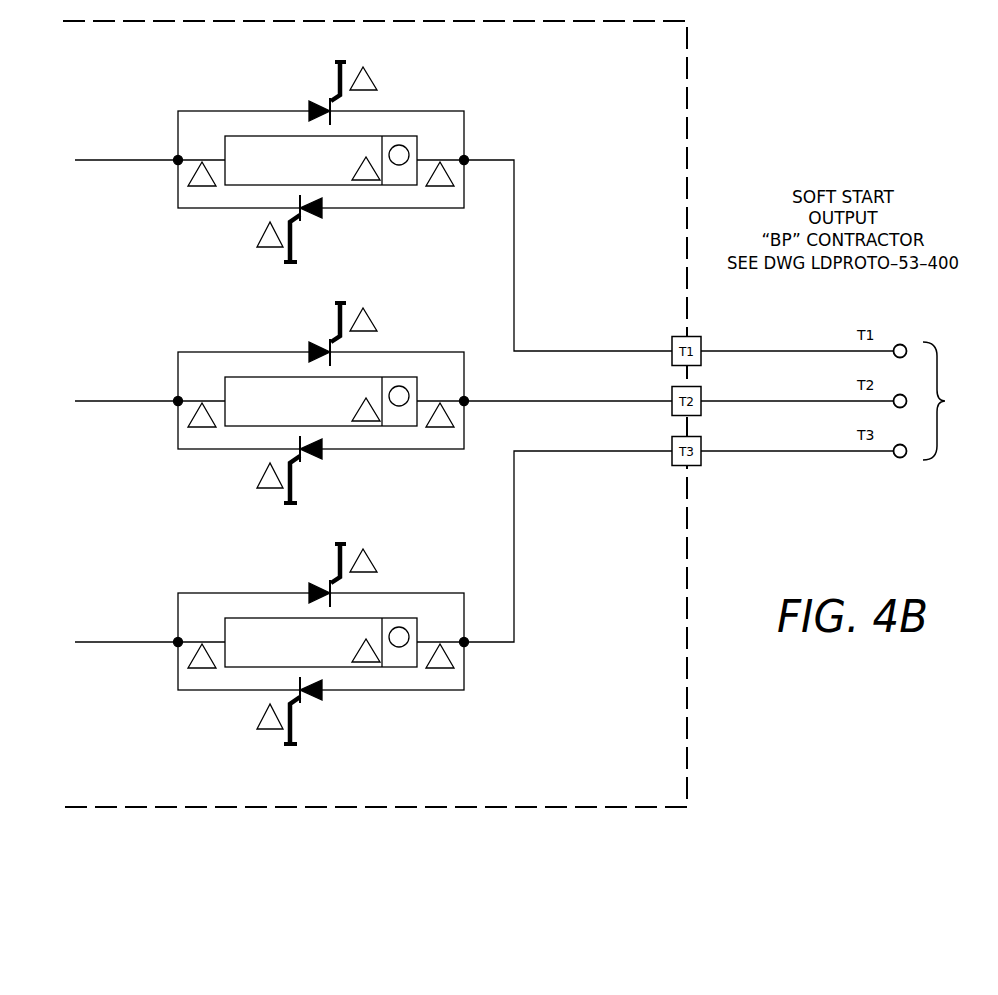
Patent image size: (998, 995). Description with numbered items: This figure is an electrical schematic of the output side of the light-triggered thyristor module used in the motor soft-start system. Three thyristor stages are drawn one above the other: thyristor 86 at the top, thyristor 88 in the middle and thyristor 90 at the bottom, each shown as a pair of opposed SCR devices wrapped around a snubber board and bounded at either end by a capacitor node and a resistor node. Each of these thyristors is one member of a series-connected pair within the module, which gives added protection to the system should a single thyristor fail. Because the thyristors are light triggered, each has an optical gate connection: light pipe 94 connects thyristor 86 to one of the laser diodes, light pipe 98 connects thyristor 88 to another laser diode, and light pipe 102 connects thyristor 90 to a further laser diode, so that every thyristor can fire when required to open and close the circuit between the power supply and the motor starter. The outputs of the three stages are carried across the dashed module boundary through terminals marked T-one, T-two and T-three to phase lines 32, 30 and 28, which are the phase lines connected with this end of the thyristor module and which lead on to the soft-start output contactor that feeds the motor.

The thyristor 86 is at (423, 203).
The thyristor 88 is at (423, 444).
The thyristor 90 is at (440, 685).
The light pipe 94 is at (343, 63).
The light pipe 98 is at (343, 304).
The light pipe 102 is at (343, 545).
The phase line 32 is at (738, 351).
The phase line 30 is at (753, 401).
The phase line 28 is at (787, 451).